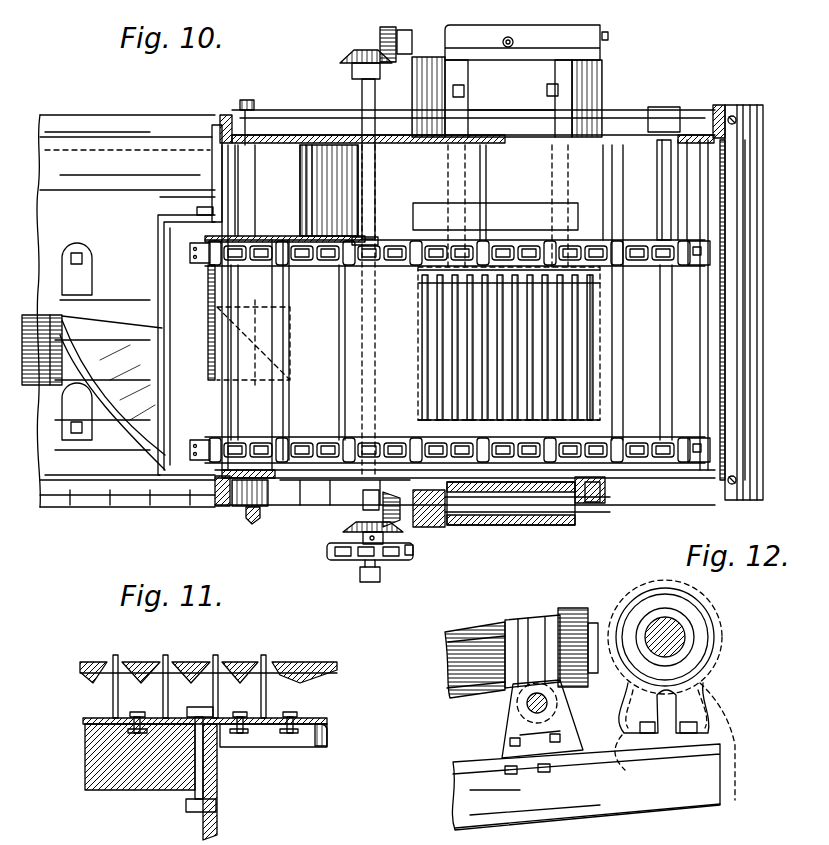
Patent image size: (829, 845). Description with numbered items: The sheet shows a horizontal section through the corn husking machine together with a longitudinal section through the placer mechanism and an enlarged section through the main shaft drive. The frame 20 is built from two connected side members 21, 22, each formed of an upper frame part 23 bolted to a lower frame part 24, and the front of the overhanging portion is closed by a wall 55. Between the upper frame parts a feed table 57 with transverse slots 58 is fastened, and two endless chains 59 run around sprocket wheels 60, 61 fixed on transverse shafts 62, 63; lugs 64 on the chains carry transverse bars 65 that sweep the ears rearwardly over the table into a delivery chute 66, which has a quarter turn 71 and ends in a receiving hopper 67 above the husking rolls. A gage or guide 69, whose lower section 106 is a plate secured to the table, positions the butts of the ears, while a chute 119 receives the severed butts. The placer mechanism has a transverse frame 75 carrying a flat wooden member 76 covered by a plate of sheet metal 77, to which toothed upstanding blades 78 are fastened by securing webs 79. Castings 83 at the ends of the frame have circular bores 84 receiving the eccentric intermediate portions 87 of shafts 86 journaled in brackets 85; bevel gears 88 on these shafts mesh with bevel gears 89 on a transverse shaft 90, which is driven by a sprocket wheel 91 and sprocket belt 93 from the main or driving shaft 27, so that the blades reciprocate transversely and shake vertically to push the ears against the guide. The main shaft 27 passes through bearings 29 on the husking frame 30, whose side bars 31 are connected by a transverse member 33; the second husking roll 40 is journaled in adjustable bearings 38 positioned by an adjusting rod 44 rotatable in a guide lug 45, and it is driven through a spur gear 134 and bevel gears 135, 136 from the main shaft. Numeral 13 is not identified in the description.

In FIG. 10, the bar 13 is at (590, 357).
In FIG. 10, the frame 20 is at (693, 102).
In FIG. 10, the side member 21 is at (300, 118).
In FIG. 10, the side member 22 is at (300, 500).
In FIG. 10, the upper frame part 23 is at (322, 122).
In FIG. 10, the lower frame part 24 is at (98, 125).
In FIG. 12, the main or driving shaft 27 is at (688, 642).
In FIG. 12, the bearing 29 is at (707, 678).
In FIG. 12, the husking frame 30 is at (560, 782).
In FIG. 12, the side bar 31 is at (455, 799).
In FIG. 12, the transverse member 33 is at (543, 770).
In FIG. 12, the adjustable bearing 38 is at (528, 632).
In FIG. 12, the second husking roll 40 is at (477, 697).
In FIG. 12, the adjusting rod 44 is at (525, 712).
In FIG. 12, the guide lug 45 is at (557, 718).
In FIG. 10, the wall 55 is at (745, 318).
In FIG. 10, the feed table 57 is at (481, 310).
In FIG. 11, the feed table 57 is at (324, 670).
In FIG. 10, the transverse slot 58 is at (598, 333).
In FIG. 11, the transverse slot 58 is at (188, 655).
In FIG. 10, the endless chain 59 is at (596, 246).
In FIG. 10, the sprocket wheel 60 is at (690, 240).
In FIG. 10, the sprocket wheel 61 is at (260, 250).
In FIG. 10, the shaft 62 is at (670, 181).
In FIG. 10, the shaft 63 is at (256, 526).
In FIG. 10, the bracket or lug 64 is at (338, 320).
In FIG. 10, the transverse lug or bar 65 is at (340, 315).
In FIG. 10, the delivery chute 66 is at (160, 425).
In FIG. 10, the receiving hopper 67 is at (102, 341).
In FIG. 10, the gage or guide 69 is at (427, 212).
In FIG. 10, the quarter turn 71 is at (160, 335).
In FIG. 10, the frame 75 is at (547, 98).
In FIG. 11, the frame 75 is at (178, 811).
In FIG. 11, the flat wooden member 76 is at (125, 780).
In FIG. 11, the plate of sheet metal 77 is at (263, 735).
In FIG. 10, the toothed upstanding blade 78 is at (445, 320).
In FIG. 11, the toothed upstanding blade 78 is at (112, 693).
In FIG. 11, the securing web 79 is at (175, 718).
In FIG. 10, the casting 83 is at (495, 60).
In FIG. 10, the circular bore 84 is at (560, 527).
In FIG. 10, the bracket 85 is at (412, 88).
In FIG. 10, the shaft 86 is at (608, 37).
In FIG. 10, the eccentric intermediate portion 87 is at (592, 528).
In FIG. 10, the bevel gear 88 is at (389, 27).
In FIG. 10, the bevel gear 89 is at (352, 58).
In FIG. 10, the transverse shaft 90 is at (363, 209).
In FIG. 10, the sprocket wheel 91 is at (330, 553).
In FIG. 10, the sprocket belt 93 is at (360, 572).
In FIG. 10, the lower section 106 is at (479, 212).
In FIG. 10, the chute 119 is at (300, 187).
In FIG. 12, the spur gear 134 is at (586, 603).
In FIG. 12, the bevel gear 135 is at (618, 773).
In FIG. 12, the bevel gear 136 is at (703, 615).